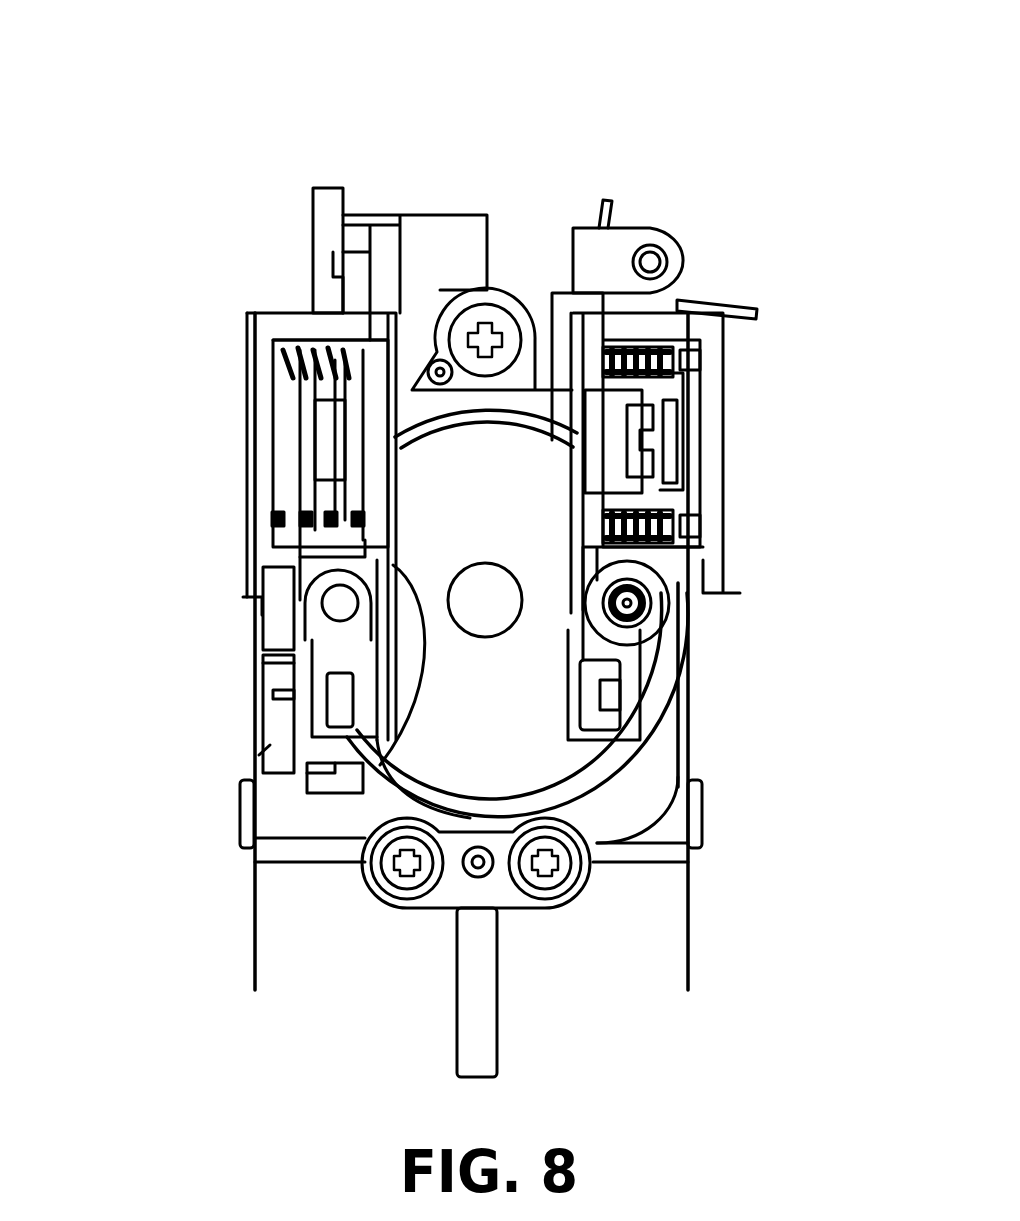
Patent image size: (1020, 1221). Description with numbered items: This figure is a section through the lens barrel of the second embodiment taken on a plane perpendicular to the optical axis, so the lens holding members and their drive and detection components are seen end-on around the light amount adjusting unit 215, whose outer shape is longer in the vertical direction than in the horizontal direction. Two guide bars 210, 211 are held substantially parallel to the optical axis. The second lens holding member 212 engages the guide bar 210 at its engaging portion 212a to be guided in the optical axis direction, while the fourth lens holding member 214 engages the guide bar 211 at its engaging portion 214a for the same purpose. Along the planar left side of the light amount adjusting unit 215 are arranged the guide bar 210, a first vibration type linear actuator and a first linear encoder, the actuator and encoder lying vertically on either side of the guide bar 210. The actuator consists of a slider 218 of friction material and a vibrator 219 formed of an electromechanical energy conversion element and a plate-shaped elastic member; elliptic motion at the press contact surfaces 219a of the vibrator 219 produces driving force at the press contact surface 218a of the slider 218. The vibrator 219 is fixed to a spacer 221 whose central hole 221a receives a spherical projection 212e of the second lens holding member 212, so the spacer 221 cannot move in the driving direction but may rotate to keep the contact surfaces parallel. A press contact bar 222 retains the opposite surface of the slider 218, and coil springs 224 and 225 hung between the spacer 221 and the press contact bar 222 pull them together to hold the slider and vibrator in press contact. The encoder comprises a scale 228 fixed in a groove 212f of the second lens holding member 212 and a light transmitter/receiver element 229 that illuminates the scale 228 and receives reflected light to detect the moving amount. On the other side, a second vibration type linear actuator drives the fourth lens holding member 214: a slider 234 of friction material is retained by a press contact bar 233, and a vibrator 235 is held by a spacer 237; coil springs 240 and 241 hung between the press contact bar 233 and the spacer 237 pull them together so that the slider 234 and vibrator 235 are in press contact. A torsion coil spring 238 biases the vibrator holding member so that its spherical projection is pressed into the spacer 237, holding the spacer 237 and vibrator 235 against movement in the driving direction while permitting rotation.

The guide bar 210 is at (243, 613).
The guide bar 211 is at (670, 605).
The second lens holding member 212 is at (403, 483).
The engaging portion 212a is at (290, 652).
The spherical projection 212e is at (247, 320).
The groove 212f is at (290, 730).
The fourth lens holding member 214 is at (527, 757).
The engaging portion 214a is at (673, 673).
The light amount adjusting unit 215 is at (693, 800).
The slider 218 is at (293, 457).
The press contact surface 218a is at (297, 443).
The vibrator 219 is at (290, 407).
The press contact surfaces 219a is at (245, 505).
The spacer 221 is at (318, 340).
The hole 221a is at (370, 420).
The press contact bar 222 is at (273, 358).
The coil spring 224 is at (315, 340).
The coil spring 225 is at (395, 700).
The scale 228 is at (280, 693).
The light transmitter/receiver element 229 is at (253, 770).
The press contact bar 233 is at (590, 350).
The slider 234 is at (640, 488).
The vibrator 235 is at (673, 460).
The spacer 237 is at (700, 360).
The torsion coil spring 238 is at (725, 345).
The coil spring 240 is at (638, 345).
The coil spring 241 is at (645, 603).